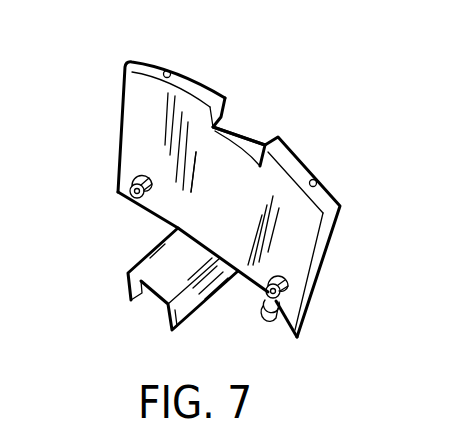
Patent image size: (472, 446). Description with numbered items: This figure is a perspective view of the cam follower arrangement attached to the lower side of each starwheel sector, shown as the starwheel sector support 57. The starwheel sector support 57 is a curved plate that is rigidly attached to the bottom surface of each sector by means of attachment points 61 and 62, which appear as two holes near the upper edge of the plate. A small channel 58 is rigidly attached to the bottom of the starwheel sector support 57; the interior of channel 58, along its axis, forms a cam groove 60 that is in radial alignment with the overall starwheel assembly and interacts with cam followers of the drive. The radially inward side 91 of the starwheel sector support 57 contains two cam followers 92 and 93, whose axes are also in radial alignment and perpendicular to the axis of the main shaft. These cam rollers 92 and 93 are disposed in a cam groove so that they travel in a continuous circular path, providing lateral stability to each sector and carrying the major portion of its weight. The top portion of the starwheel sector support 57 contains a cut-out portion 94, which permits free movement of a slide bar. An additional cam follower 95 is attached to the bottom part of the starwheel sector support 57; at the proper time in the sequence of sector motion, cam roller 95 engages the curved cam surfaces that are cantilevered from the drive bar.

The starwheel sector support 57 is at (247, 210).
The channel 58 is at (206, 261).
The cam groove 60 is at (150, 303).
The attachment point 61 is at (317, 182).
The attachment point 62 is at (168, 71).
The radially inward side 91 is at (148, 132).
The cam follower 92 is at (119, 192).
The cam follower 93 is at (284, 290).
The cut-out portion 94 is at (240, 133).
The cam follower 95 is at (262, 315).